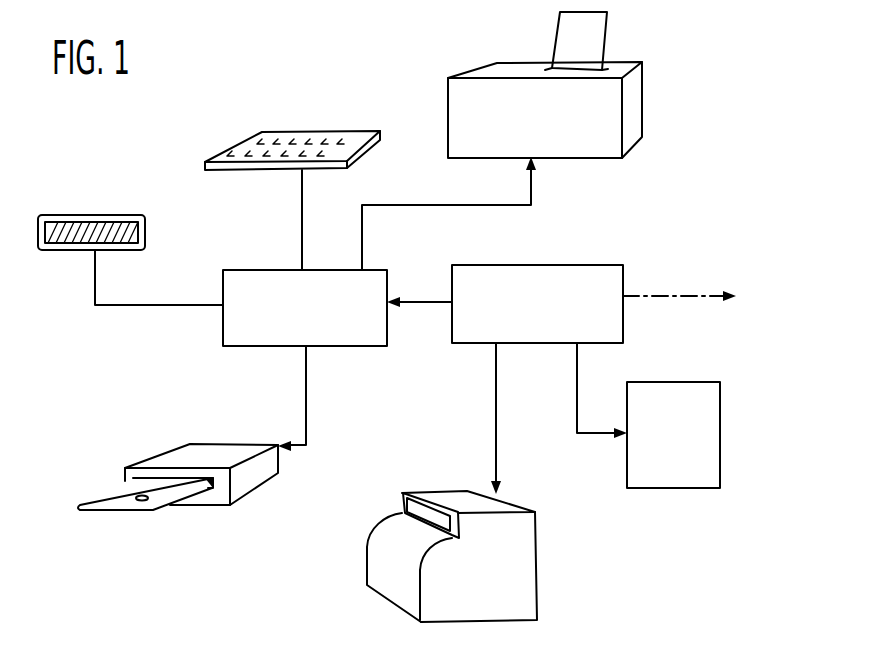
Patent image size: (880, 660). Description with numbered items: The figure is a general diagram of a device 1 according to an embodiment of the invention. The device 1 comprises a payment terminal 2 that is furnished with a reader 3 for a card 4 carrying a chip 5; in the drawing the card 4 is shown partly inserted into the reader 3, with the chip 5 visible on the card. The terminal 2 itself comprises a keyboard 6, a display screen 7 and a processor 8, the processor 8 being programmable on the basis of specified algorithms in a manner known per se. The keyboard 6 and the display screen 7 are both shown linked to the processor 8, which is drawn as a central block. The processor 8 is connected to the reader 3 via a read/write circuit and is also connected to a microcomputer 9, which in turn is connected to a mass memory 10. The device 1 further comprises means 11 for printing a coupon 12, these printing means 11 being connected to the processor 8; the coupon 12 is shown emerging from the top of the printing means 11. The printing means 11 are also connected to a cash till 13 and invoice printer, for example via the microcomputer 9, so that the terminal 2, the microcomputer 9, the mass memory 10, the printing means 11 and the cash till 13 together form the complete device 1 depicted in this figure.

The device 1 is at (656, 170).
The payment terminal 2 is at (182, 235).
The reader 3 is at (215, 452).
The card 4 is at (99, 494).
The chip 5 is at (140, 502).
The keyboard 6 is at (346, 131).
The display screen 7 is at (47, 213).
The processor 8 is at (265, 275).
The microcomputer 9 is at (480, 276).
The mass memory 10 is at (685, 390).
The means for printing a coupon 11 is at (494, 48).
The coupon 12 is at (598, 47).
The cash till 13 is at (532, 603).